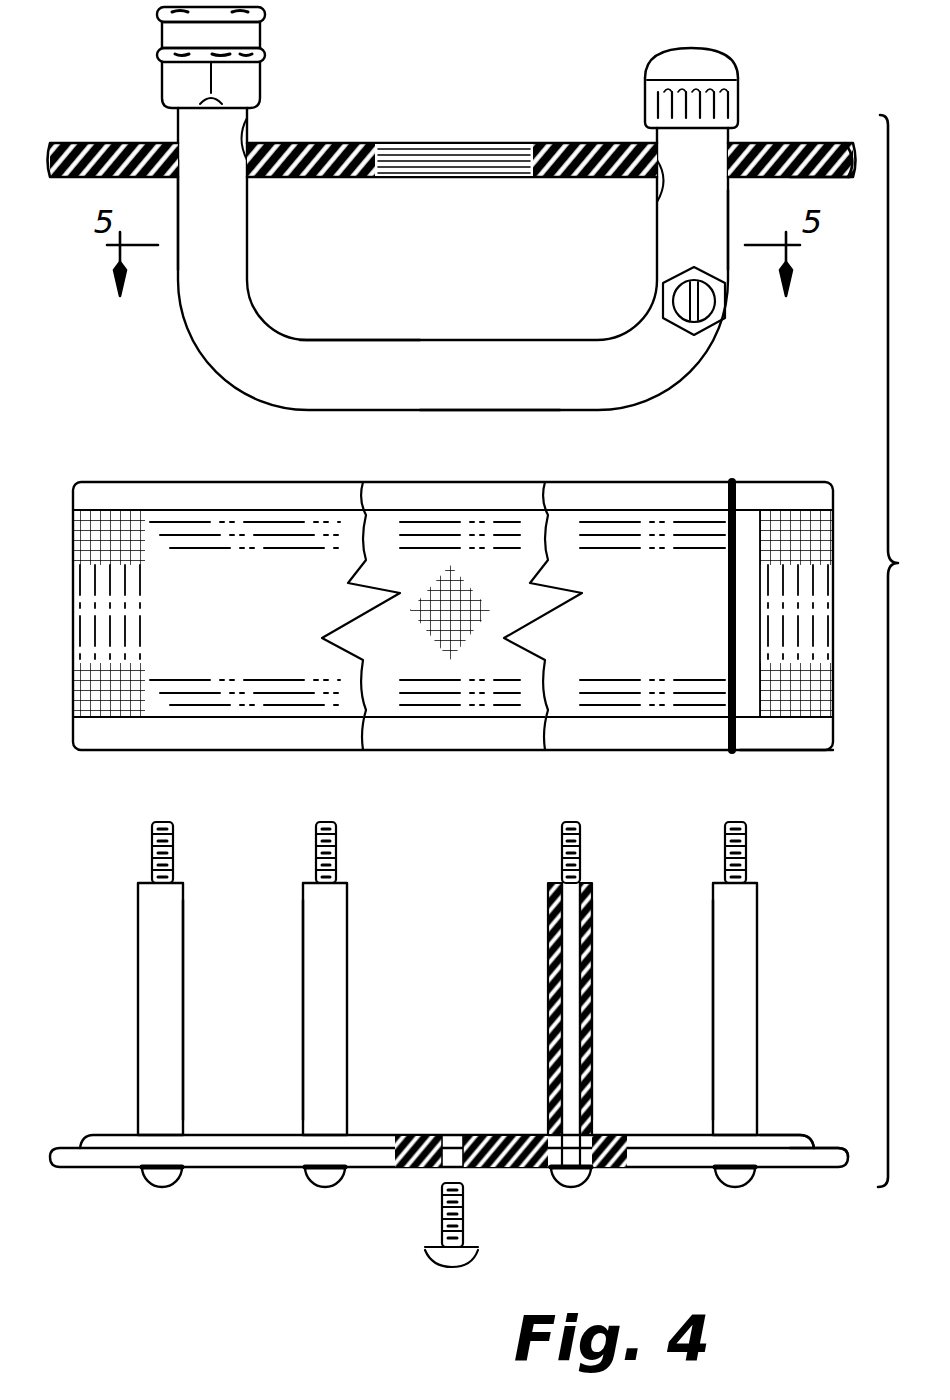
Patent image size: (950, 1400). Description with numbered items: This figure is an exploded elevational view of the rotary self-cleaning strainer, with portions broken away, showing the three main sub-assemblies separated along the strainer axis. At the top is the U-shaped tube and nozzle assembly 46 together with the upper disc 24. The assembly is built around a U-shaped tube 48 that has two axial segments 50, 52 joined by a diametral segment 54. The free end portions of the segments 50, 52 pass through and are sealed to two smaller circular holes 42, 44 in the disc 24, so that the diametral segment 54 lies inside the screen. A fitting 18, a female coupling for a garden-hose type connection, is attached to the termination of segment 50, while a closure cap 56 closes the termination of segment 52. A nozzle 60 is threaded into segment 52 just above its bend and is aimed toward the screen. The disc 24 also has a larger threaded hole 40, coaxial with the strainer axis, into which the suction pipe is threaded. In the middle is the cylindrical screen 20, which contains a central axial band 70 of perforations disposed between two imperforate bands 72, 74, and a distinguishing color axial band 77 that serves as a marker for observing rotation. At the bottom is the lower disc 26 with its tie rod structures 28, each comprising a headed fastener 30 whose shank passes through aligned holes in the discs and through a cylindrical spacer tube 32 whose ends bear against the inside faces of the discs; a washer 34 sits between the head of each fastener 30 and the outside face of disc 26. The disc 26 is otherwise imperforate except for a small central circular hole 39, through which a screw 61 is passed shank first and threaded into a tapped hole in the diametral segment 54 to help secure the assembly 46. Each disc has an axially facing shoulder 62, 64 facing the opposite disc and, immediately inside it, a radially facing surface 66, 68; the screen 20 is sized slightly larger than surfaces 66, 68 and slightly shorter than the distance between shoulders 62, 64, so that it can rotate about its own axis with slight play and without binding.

The fitting 18 is at (264, 70).
The cylindrical screen 20 is at (818, 484).
The circular disc 24 is at (127, 146).
The circular disc 26 is at (237, 1168).
The tie rod structures 28 is at (303, 935).
The headed fastener 30 is at (313, 828).
The spacer tube 32 is at (303, 1033).
The washer 34 is at (146, 1168).
The circular hole 39 is at (450, 1136).
The threaded hole 40 is at (460, 158).
The circular hole 42 is at (247, 120).
The circular hole 44 is at (664, 196).
The U-shaped tube and nozzle assembly 46 is at (196, 364).
The U-shaped tube 48 is at (322, 343).
The axial segment 50 is at (228, 240).
The axial segment 52 is at (678, 250).
The diametral segment 54 is at (432, 355).
The closure cap 56 is at (740, 95).
The nozzle 60 is at (724, 304).
The screw 61 is at (463, 1207).
The axially facing shoulder 62 is at (818, 158).
The axially facing shoulder 64 is at (826, 1148).
The radially facing surface 66 is at (818, 165).
The radially facing surface 68 is at (806, 1136).
The perforated axial band 70 is at (805, 622).
The imperforate band 72 is at (818, 498).
The imperforate band 74 is at (800, 738).
The distinguishing color axial band 77 is at (736, 500).